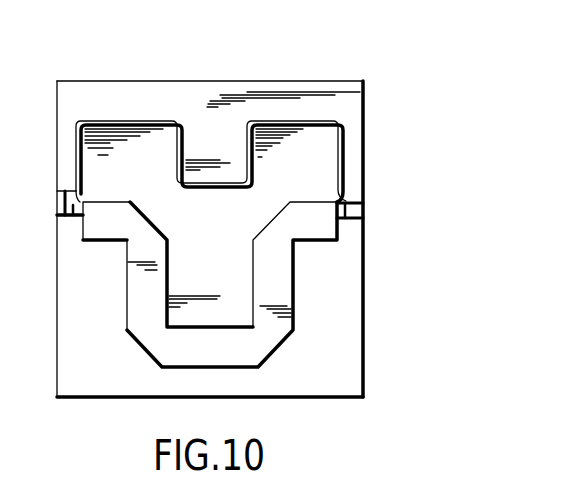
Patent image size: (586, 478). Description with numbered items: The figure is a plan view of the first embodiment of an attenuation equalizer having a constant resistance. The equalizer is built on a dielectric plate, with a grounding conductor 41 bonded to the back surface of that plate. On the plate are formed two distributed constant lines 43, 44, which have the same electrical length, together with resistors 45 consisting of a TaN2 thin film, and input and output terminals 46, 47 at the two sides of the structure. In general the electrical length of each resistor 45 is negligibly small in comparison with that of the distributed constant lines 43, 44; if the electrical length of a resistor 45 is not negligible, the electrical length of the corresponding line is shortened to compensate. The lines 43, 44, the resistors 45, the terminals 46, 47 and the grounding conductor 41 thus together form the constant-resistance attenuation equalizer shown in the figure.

The grounding conductor 41 is at (216, 86).
The distributed constant line 43 is at (133, 121).
The distributed constant line 44 is at (235, 356).
The resistor 45 is at (75, 217).
The input terminal 46 is at (57, 199).
The output terminal 47 is at (355, 203).